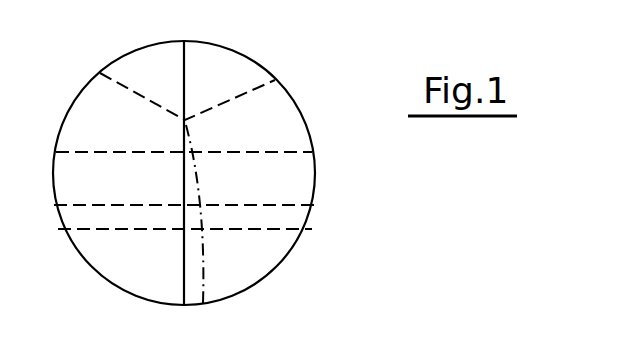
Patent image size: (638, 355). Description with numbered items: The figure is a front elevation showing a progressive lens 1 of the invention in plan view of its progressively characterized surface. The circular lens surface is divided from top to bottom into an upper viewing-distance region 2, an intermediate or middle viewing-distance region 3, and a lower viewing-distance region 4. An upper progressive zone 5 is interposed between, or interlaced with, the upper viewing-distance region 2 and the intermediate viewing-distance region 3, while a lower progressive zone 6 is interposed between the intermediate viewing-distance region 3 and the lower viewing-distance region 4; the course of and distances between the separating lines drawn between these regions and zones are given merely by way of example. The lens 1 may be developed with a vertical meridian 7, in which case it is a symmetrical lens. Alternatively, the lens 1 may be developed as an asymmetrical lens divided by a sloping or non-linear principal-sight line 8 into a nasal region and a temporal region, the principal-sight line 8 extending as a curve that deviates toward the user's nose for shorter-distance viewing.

The progressive lens 1 is at (299, 91).
The upper viewing-distance region 2 is at (237, 80).
The intermediate viewing-distance region 3 is at (298, 190).
The lower viewing-distance region 4 is at (262, 260).
The upper progressive zone 5 is at (294, 144).
The lower progressive zone 6 is at (297, 220).
The vertical meridian 7 is at (180, 282).
The principal-sight line 8 is at (200, 285).